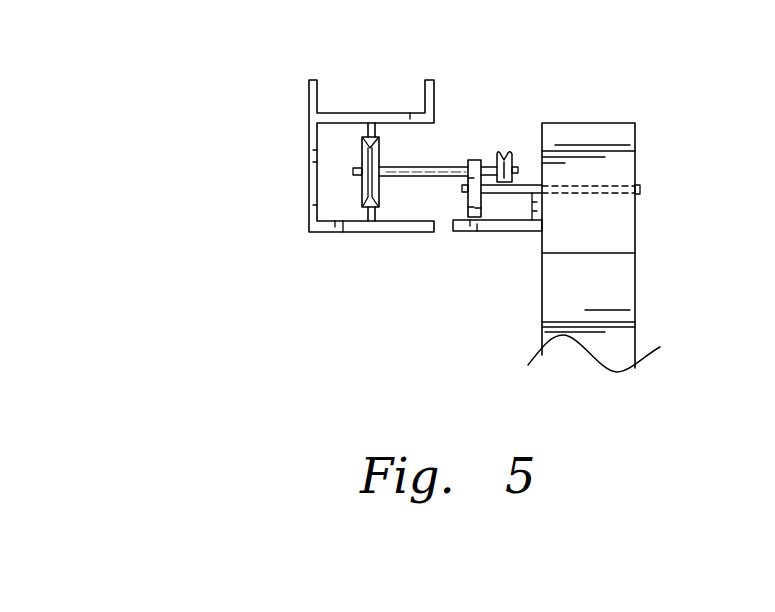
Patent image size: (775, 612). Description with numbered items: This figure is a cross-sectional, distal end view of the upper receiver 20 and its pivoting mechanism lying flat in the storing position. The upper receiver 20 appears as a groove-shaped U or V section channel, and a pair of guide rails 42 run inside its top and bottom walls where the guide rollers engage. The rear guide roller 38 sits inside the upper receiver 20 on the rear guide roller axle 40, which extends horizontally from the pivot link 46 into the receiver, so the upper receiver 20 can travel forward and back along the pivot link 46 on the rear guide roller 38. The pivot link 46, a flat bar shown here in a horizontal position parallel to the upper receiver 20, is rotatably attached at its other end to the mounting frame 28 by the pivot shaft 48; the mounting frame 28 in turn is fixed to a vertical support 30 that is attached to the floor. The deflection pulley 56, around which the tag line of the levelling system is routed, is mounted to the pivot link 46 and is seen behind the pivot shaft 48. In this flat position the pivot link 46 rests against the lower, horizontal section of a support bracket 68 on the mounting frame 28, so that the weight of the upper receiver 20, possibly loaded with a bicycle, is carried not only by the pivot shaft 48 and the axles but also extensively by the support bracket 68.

The upper receiver 20 is at (309, 144).
The guide rails 42 is at (365, 136).
The rear guide roller 38 is at (362, 194).
The rear guide roller axle 40 is at (428, 177).
The pivot link 46 is at (475, 159).
The deflection pulley 56 is at (503, 154).
The pivot shaft 48 is at (641, 188).
The support bracket 68 is at (492, 232).
The mounting frame 28 is at (628, 152).
The vertical support 30 is at (622, 283).